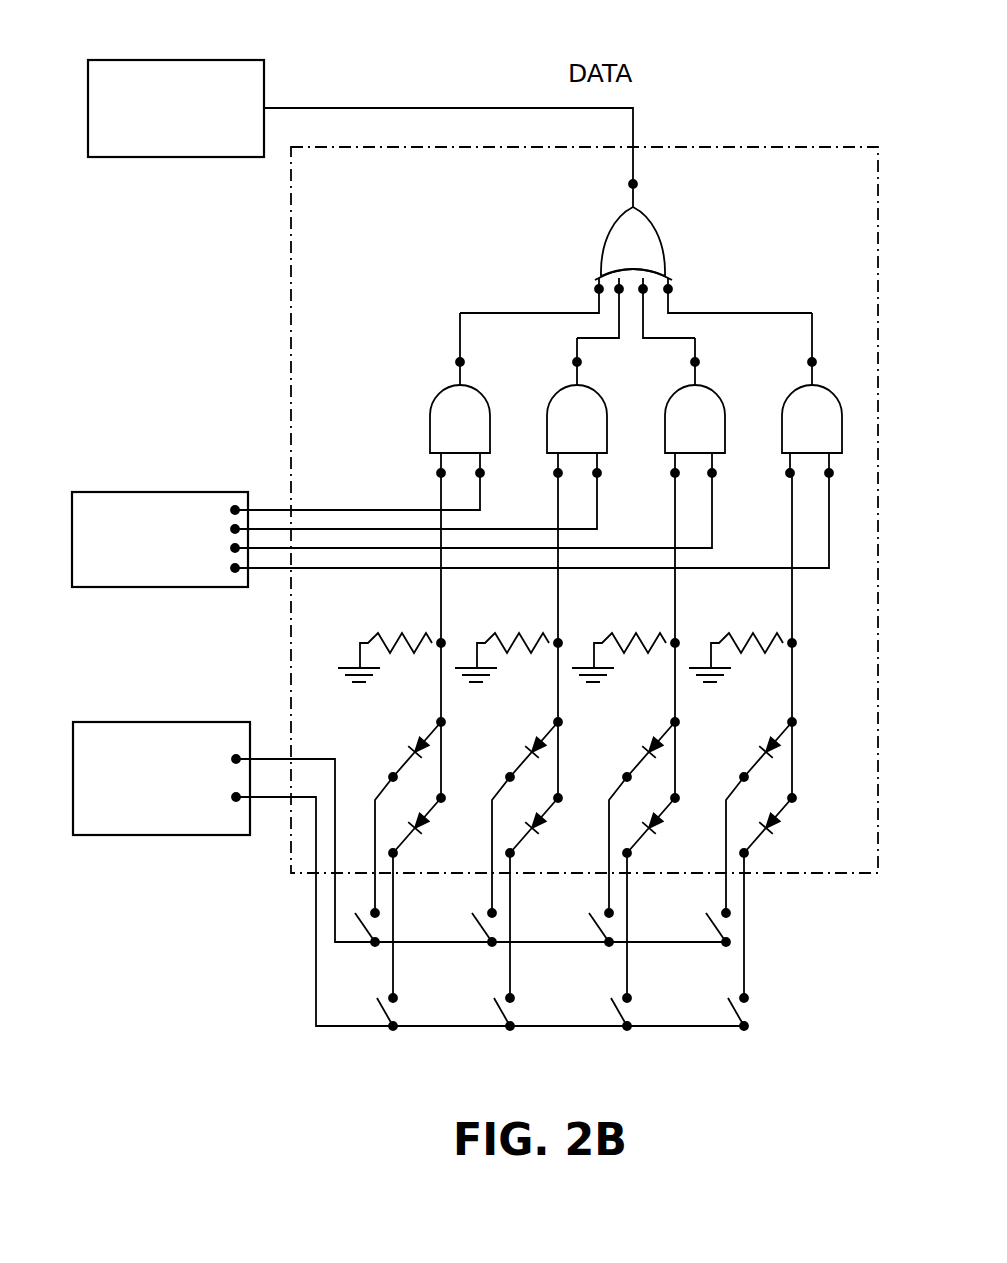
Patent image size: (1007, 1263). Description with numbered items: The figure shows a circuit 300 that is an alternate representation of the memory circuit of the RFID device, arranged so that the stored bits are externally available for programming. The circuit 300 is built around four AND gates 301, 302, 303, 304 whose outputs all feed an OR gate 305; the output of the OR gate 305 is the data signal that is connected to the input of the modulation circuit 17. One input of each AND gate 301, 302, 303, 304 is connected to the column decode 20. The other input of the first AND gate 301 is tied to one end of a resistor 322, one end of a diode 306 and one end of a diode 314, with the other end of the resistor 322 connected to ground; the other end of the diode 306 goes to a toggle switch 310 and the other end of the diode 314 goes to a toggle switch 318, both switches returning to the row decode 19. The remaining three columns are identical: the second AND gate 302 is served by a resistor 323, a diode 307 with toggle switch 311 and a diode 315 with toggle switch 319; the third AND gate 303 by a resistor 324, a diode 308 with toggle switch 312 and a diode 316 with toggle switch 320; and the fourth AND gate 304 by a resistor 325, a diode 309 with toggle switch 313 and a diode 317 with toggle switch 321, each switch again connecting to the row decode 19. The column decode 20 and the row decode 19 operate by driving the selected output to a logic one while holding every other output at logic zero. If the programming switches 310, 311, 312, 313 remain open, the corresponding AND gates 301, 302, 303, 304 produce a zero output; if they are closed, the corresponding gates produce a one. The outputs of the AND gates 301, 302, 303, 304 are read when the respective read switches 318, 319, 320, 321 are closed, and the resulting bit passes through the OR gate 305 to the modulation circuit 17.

The modulation circuit 17 is at (180, 60).
The row decode 19 is at (178, 722).
The column decode 20 is at (165, 492).
The circuit 300 is at (810, 147).
The AND gate 301 is at (430, 415).
The AND gate 302 is at (547, 428).
The AND gate 303 is at (665, 432).
The AND gate 304 is at (782, 425).
The OR gate 305 is at (602, 252).
The diode 306 is at (403, 748).
The diode 307 is at (520, 748).
The diode 308 is at (640, 748).
The diode 309 is at (758, 748).
The toggle switch 310 is at (358, 918).
The toggle switch 311 is at (478, 926).
The toggle switch 312 is at (595, 926).
The toggle switch 313 is at (711, 926).
The diode 314 is at (462, 838).
The diode 315 is at (579, 838).
The diode 316 is at (696, 838).
The diode 317 is at (813, 838).
The toggle switch 318 is at (380, 1011).
The toggle switch 319 is at (496, 1011).
The toggle switch 320 is at (612, 1011).
The toggle switch 321 is at (728, 1011).
The resistor 322 is at (398, 634).
The resistor 323 is at (520, 634).
The resistor 324 is at (637, 634).
The resistor 325 is at (751, 634).